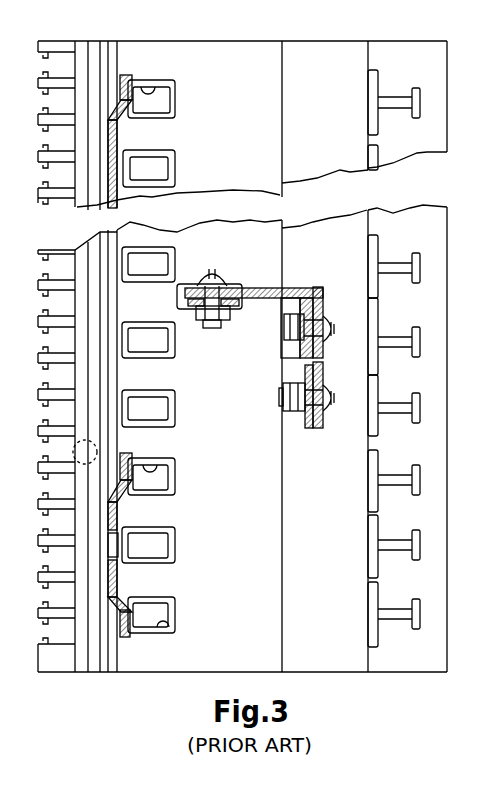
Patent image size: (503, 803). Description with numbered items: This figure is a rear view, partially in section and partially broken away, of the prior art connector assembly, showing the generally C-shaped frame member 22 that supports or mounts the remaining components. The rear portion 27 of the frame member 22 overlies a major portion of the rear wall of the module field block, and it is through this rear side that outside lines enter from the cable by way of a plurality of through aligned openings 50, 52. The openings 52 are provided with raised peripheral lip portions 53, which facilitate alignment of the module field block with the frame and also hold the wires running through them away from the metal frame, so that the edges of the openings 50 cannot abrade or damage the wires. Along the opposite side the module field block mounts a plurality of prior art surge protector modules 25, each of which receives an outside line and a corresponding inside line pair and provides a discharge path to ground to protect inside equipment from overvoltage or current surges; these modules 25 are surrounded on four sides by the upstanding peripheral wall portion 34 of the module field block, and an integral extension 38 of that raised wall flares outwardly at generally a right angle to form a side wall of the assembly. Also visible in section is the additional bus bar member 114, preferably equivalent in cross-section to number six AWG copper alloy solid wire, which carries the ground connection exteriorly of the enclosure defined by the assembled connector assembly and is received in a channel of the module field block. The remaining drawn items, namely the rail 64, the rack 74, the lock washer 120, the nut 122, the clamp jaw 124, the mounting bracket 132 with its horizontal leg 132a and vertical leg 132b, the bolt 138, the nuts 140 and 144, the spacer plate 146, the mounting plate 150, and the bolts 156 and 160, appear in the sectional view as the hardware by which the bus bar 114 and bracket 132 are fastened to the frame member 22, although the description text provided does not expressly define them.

The frame member 22 is at (290, 640).
The surge protector modules 25 is at (417, 97).
The rear portion of the frame member 27 is at (248, 503).
The peripheral wall portion 34 is at (337, 627).
The integral extension 38 is at (427, 666).
The openings 50 is at (177, 93).
The openings 52 is at (153, 86).
The raised peripheral lip portions 53 is at (175, 113).
The rail 64 is at (100, 660).
The terminal block rack 74 is at (45, 147).
The bus bar member 114 is at (181, 306).
The lock washer 120 is at (248, 304).
The nut 122 is at (234, 306).
The clamp jaw 124 is at (234, 289).
The mounting bracket 132 is at (297, 285).
The horizontal leg of bracket 132a is at (285, 286).
The vertical leg of bracket 132b is at (347, 282).
The bolt 138 is at (216, 272).
The nut 140 is at (292, 357).
The nut 144 is at (332, 323).
The spacer plate 146 is at (300, 428).
The mounting plate 150 is at (322, 429).
The bolt 156 is at (330, 409).
The bolt 160 is at (326, 345).